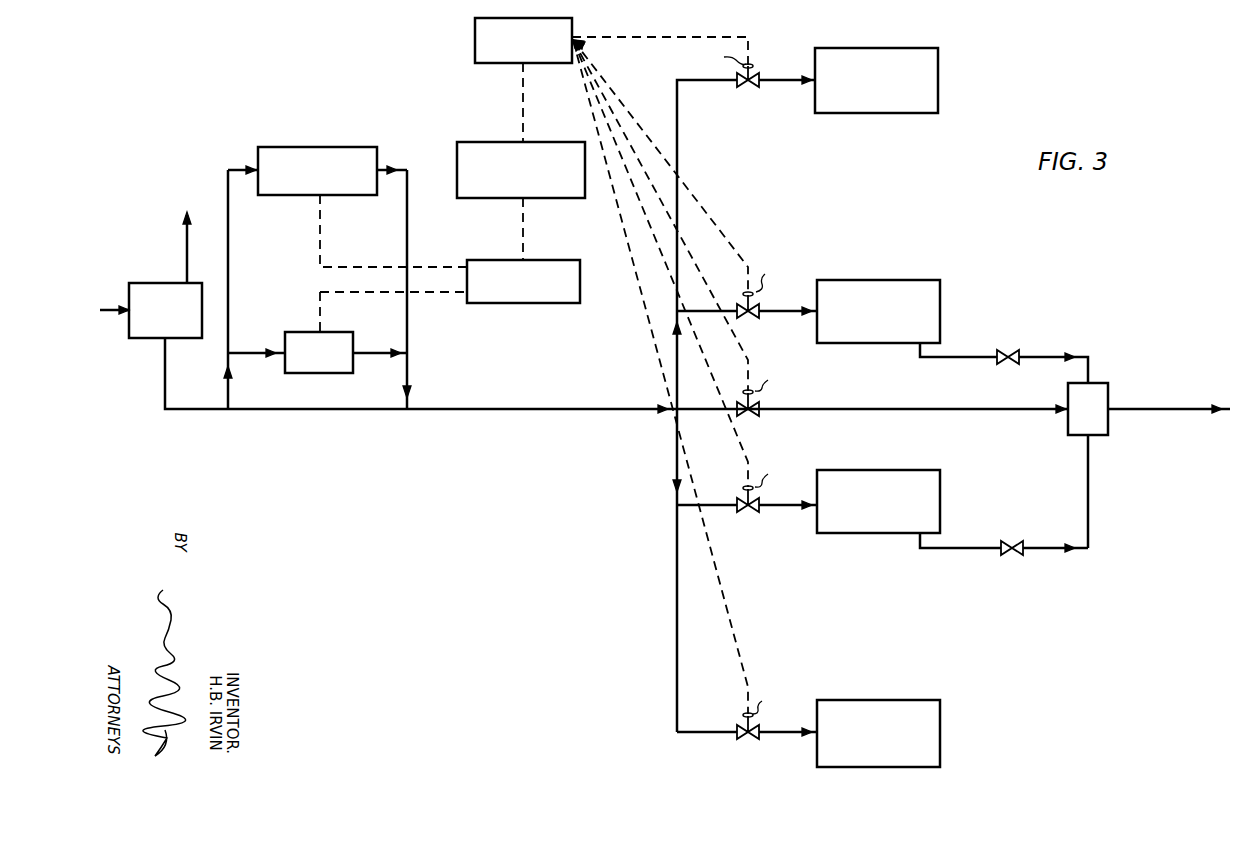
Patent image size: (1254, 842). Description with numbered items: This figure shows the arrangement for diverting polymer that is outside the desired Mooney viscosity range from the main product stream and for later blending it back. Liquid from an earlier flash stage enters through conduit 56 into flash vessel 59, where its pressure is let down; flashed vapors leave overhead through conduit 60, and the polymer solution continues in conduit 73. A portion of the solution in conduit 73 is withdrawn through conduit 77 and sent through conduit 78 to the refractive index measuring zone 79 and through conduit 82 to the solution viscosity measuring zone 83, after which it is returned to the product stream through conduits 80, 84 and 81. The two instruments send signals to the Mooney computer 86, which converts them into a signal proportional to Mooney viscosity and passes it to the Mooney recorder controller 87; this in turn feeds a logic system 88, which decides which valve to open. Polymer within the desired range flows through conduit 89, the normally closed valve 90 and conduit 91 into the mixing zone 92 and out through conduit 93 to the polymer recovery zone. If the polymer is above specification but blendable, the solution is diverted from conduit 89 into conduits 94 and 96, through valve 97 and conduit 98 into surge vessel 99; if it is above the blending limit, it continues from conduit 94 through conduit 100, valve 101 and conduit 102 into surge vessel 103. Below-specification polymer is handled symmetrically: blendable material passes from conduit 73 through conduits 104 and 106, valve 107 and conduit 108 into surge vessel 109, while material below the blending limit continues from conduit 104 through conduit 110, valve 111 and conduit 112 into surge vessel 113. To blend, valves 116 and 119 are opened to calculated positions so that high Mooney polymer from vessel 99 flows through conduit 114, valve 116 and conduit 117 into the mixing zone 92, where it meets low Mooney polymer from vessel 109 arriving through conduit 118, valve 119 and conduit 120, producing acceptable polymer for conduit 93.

The conduit 56 is at (124, 307).
The flash vessel 59 is at (140, 338).
The conduit 60 is at (186, 221).
The conduit 73 is at (536, 408).
The conduit 77 is at (228, 374).
The conduit 78 is at (268, 350).
The refractive index measuring zone 79 is at (320, 365).
The conduit 80 is at (392, 352).
The conduit 81 is at (409, 366).
The conduit 82 is at (229, 216).
The solution viscosity measuring zone 83 is at (340, 147).
The conduit 84 is at (409, 214).
The Mooney computer 86 is at (562, 303).
The Mooney recorder controller 87 is at (457, 142).
The logic system 88 is at (475, 32).
The conduit 89 is at (716, 411).
The valve 90 is at (758, 413).
The conduit 91 is at (942, 410).
The mixing zone 92 is at (1102, 400).
The conduit 93 is at (1200, 408).
The conduit 94 is at (680, 362).
The conduit 96 is at (711, 312).
The valve 97 is at (744, 315).
The conduit 98 is at (806, 313).
The surge vessel 99 is at (940, 312).
The conduit 100 is at (677, 112).
The valve 101 is at (740, 92).
The conduit 102 is at (784, 84).
The surge vessel 103 is at (897, 48).
The conduit 104 is at (677, 470).
The conduit 106 is at (710, 505).
The valve 107 is at (752, 503).
The conduit 108 is at (806, 507).
The surge vessel 109 is at (888, 534).
The conduit 110 is at (677, 641).
The valve 111 is at (744, 714).
The conduit 112 is at (800, 731).
The surge vessel 113 is at (940, 700).
The conduit 114 is at (972, 358).
The valve 116 is at (1013, 358).
The conduit 117 is at (1089, 365).
The conduit 118 is at (942, 554).
The valve 119 is at (1008, 540).
The conduit 120 is at (1088, 474).